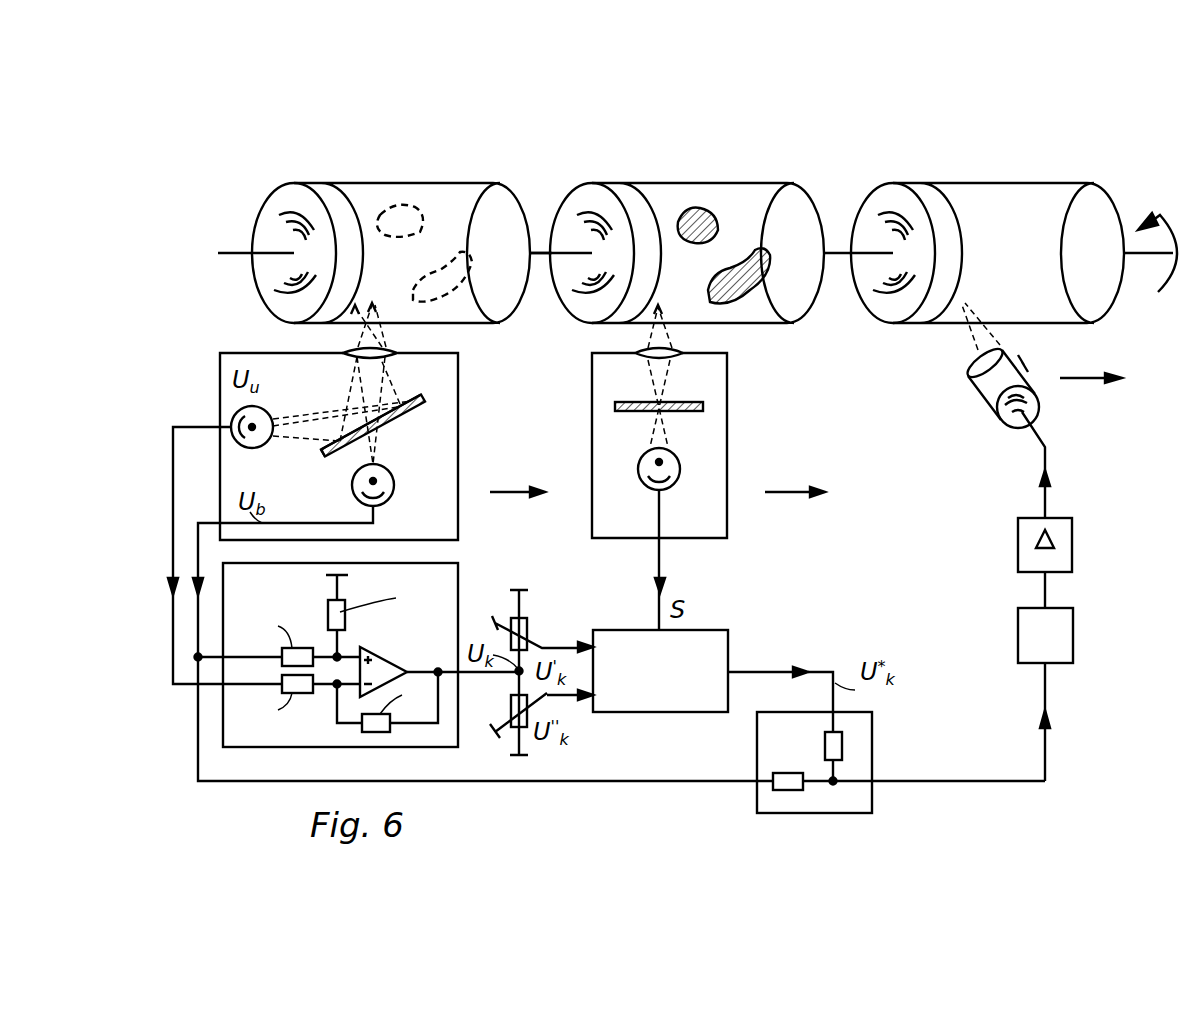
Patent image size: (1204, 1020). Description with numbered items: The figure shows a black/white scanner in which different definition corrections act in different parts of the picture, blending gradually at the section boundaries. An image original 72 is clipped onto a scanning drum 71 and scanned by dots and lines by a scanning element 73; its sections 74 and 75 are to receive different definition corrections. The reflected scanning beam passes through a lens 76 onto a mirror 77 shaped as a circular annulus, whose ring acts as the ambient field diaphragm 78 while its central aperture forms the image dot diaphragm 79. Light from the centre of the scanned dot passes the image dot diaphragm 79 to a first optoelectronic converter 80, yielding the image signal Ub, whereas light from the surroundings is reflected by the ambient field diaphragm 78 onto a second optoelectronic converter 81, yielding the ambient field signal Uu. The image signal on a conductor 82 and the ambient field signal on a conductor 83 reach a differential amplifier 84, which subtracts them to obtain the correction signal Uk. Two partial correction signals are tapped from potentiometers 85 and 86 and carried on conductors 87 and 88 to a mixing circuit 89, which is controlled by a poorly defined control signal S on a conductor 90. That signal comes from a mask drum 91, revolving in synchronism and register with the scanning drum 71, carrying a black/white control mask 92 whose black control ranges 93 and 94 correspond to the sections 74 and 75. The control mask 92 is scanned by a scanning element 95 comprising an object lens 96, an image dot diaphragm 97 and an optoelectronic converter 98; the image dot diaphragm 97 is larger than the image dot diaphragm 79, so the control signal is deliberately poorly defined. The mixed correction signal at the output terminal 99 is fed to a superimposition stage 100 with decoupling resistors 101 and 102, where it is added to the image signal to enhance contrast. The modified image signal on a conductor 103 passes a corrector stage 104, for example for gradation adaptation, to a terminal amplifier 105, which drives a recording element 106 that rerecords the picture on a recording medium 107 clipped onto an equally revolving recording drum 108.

The scanning drum 71 is at (275, 212).
The image original 72 is at (450, 195).
The scanning element 73 is at (447, 462).
The section of the image original 74 is at (385, 208).
The section of the image original 75 is at (430, 292).
The lens 76 is at (343, 352).
The mirror 77 is at (415, 396).
The ambient field diaphragm 78 is at (325, 456).
The image dot diaphragm 79 is at (388, 425).
The first optoelectronic converter 80 is at (394, 487).
The second optoelectronic converter 81 is at (266, 413).
The conductor 82 is at (198, 523).
The conductor 83 is at (173, 612).
The differential amplifier 84 is at (468, 583).
The potentiometer 85 is at (528, 620).
The potentiometer 86 is at (511, 706).
The conductor 87 is at (548, 645).
The conductor 88 is at (560, 700).
The mixing circuit 89 is at (688, 700).
The conductor 90 is at (663, 568).
The mask drum 91 is at (585, 210).
The black/white control mask 92 is at (755, 205).
The control range 93 is at (690, 208).
The control range 94 is at (735, 300).
The scanning element 95 is at (707, 447).
The object lens 96 is at (637, 352).
The image dot diaphragm 97 is at (690, 402).
The optoelectronic converter 98 is at (648, 484).
The output terminal 99 is at (735, 672).
The superimposition stage 100 is at (857, 758).
The decoupling resistor 101 is at (826, 745).
The decoupling resistor 102 is at (790, 778).
The conductor 103 is at (1045, 750).
The corrector stage 104 is at (1018, 637).
The terminal amplifier 105 is at (1018, 545).
The recording element 106 is at (997, 373).
The recording medium 107 is at (995, 200).
The recording drum 108 is at (880, 215).